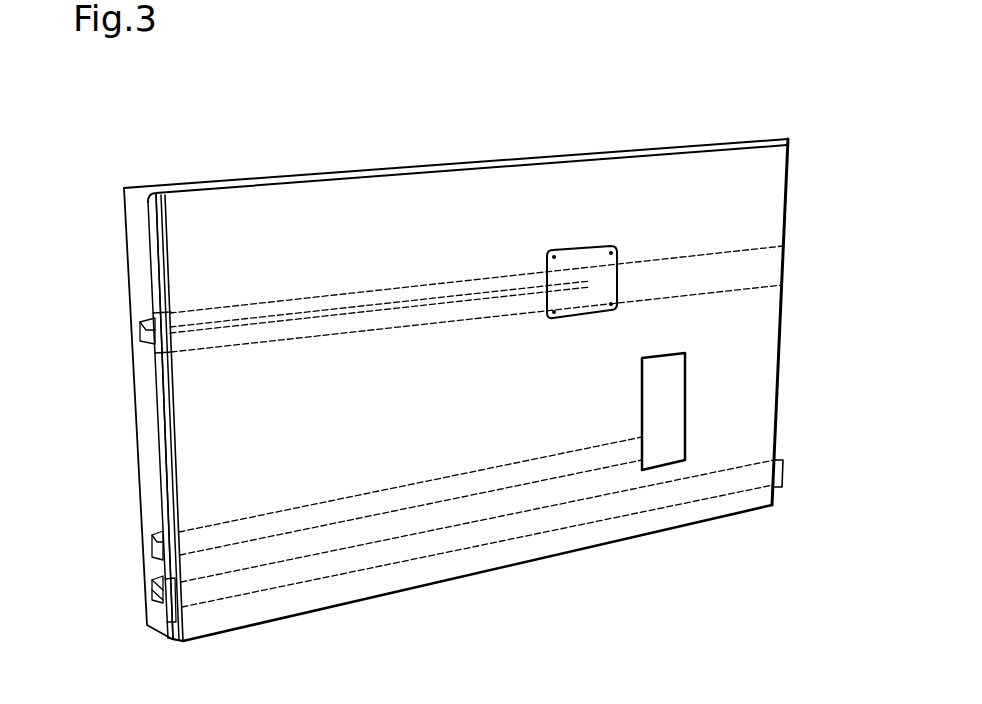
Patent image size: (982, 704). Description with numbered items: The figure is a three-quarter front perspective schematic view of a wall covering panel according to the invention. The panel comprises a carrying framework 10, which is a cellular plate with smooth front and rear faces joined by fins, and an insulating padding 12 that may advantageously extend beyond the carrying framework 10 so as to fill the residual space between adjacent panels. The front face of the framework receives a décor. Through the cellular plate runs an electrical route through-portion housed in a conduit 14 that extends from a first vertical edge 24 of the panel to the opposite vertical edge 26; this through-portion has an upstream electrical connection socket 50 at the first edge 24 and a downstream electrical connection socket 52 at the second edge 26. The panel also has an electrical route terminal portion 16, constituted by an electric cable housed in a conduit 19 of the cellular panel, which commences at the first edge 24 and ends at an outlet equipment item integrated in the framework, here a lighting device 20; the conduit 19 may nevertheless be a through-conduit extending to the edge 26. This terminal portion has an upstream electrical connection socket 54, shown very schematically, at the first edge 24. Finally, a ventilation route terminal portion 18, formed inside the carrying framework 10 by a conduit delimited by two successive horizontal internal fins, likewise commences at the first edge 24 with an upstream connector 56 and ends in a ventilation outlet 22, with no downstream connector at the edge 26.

The carrying framework 10 is at (267, 214).
The insulating padding 12 is at (138, 253).
The conduit 14 is at (152, 590).
The electrical route terminal portion 16 is at (344, 299).
The ventilation route terminal portion 18 is at (583, 474).
The conduit 19 is at (684, 247).
The lighting device 20 is at (590, 278).
The ventilation outlet 22 is at (664, 381).
The first vertical edge 24 is at (158, 456).
The opposite vertical edge 26 is at (786, 432).
The upstream electrical connection socket 50 is at (163, 612).
The downstream electrical connection socket 52 is at (784, 472).
The upstream electrical connection socket 54 is at (155, 353).
The upstream connector 56 is at (147, 545).